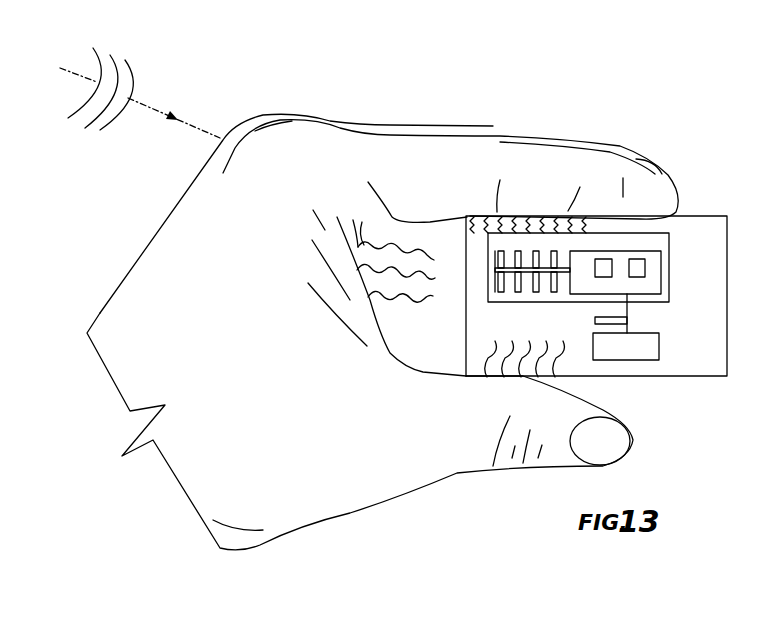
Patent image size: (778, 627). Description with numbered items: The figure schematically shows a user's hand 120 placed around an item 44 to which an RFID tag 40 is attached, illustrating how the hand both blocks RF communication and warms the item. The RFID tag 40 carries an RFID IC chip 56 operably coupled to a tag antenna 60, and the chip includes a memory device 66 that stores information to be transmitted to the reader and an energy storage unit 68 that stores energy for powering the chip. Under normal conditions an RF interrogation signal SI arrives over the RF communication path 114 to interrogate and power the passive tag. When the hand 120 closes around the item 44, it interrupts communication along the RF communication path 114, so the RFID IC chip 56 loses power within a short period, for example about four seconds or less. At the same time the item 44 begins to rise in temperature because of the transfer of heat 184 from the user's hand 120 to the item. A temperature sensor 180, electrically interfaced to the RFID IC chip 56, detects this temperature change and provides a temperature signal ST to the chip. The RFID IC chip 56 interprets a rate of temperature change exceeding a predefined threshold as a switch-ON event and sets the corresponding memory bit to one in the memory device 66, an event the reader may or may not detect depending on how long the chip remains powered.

The user's hand 120 is at (313, 483).
The RF interrogation signal SI is at (130, 43).
The RF communication path 114 is at (192, 128).
The item 44 is at (693, 216).
The RFID tag 40 is at (488, 258).
The tag antenna 60 is at (498, 288).
The RFID integrated circuit chip 56 is at (652, 262).
The energy storage unit 68 is at (606, 268).
The memory device 66 is at (638, 268).
The temperature signal ST is at (595, 319).
The temperature sensor 180 is at (638, 357).
The heat 184 is at (462, 230).